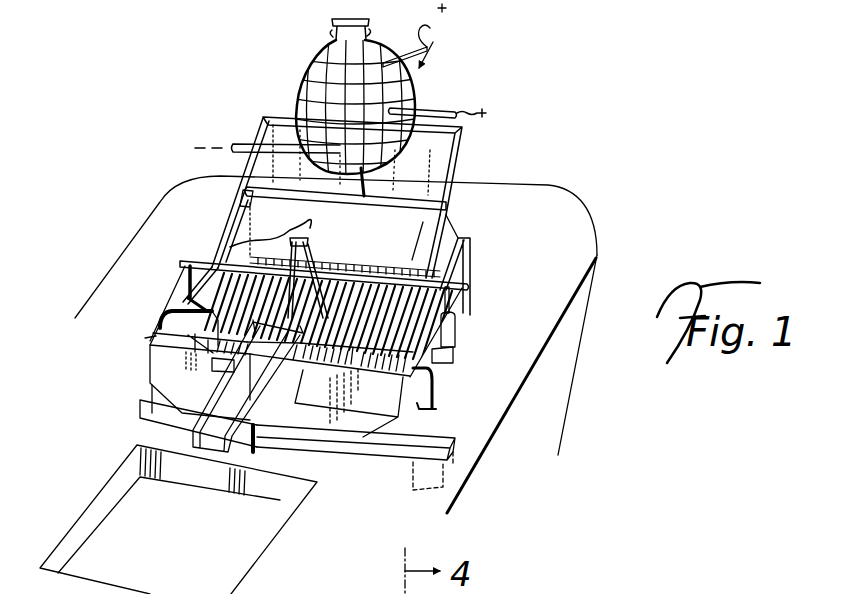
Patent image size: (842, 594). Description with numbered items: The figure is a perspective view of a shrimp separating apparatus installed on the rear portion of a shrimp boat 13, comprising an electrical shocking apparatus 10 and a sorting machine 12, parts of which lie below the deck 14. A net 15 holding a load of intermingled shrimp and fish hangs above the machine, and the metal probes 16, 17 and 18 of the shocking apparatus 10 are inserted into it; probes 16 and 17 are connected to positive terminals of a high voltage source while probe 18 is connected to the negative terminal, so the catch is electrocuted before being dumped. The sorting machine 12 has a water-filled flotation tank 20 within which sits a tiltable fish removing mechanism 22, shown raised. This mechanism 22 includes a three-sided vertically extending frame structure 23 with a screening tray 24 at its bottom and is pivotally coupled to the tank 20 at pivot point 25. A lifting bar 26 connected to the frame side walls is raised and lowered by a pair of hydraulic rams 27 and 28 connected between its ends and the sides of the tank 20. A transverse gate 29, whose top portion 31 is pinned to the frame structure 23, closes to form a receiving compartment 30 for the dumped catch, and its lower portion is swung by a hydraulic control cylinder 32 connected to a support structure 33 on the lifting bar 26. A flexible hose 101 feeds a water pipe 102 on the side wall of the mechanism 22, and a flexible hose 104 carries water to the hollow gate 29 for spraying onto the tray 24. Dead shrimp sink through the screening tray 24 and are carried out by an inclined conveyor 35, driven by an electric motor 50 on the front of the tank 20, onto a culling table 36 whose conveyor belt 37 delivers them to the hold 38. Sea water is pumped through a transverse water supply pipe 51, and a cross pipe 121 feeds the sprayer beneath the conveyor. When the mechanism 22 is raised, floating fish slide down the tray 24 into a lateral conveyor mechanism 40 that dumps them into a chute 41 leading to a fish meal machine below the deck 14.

The electrical shocking apparatus 10 is at (433, 45).
The sorting machine 12 is at (222, 219).
The shrimp boat 13 is at (590, 302).
The deck 14 is at (575, 255).
The net 15 is at (316, 58).
The probe 16 is at (398, 58).
The probe 17 is at (458, 112).
The probe 18 is at (246, 145).
The flotation tank 20 is at (474, 257).
The fish removing mechanism 22 is at (466, 147).
The frame structure 23 is at (461, 208).
The screening tray 24 is at (406, 271).
The pivot point 25 is at (436, 375).
The lifting bar 26 is at (203, 258).
The hydraulic ram 27 is at (458, 329).
The hydraulic ram 28 is at (186, 292).
The gate 29 is at (424, 222).
The receiving compartment 30 is at (310, 181).
The top portion of the gate 31 is at (382, 195).
The hydraulic control cylinder 32 is at (318, 247).
The support structure 33 is at (277, 234).
The inclined conveyor 35 is at (273, 338).
The culling table 36 is at (217, 410).
The conveyor belt 37 is at (236, 398).
The hold 38 is at (195, 545).
The lateral conveyor mechanism 40 is at (422, 436).
The chute 41 is at (410, 478).
The electric motor 50 is at (195, 366).
The transverse water supply pipe 51 is at (437, 397).
The flexible hose 101 is at (160, 317).
The water pipe 102 is at (245, 196).
The flexible hose 104 is at (240, 233).
The cross pipe 121 is at (494, 383).